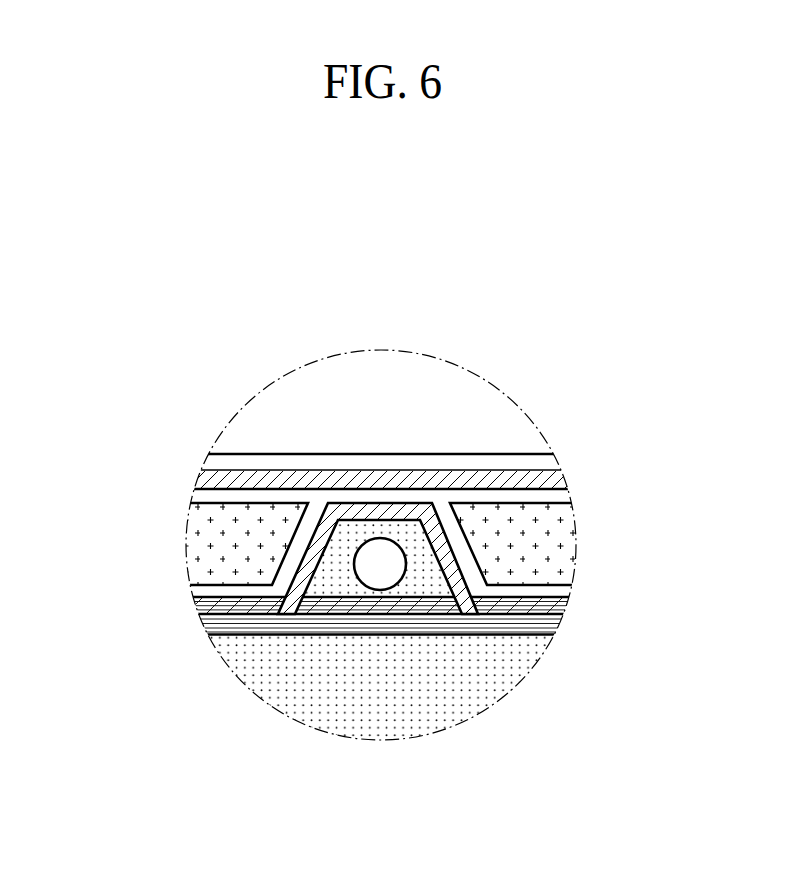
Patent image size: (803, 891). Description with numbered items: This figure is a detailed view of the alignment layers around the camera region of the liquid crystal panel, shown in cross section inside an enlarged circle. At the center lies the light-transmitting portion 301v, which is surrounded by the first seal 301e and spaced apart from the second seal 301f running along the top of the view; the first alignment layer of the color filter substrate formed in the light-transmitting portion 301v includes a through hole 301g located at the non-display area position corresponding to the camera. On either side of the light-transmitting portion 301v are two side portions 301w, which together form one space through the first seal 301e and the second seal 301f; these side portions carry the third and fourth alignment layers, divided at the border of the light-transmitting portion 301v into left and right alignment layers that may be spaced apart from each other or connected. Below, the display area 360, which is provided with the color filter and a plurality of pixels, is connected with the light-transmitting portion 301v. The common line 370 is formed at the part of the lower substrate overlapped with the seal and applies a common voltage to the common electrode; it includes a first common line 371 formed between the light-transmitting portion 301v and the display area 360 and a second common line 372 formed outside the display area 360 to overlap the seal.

The through hole 301g is at (383, 554).
The light-transmitting portion 301v is at (347, 550).
The second seal 301f is at (222, 482).
The first seal 301e is at (308, 554).
The side portion 301w is at (538, 496).
The first common line 371 is at (366, 615).
The second common line 372 is at (257, 625).
The common line 370 is at (307, 780).
The display area 360 is at (387, 700).